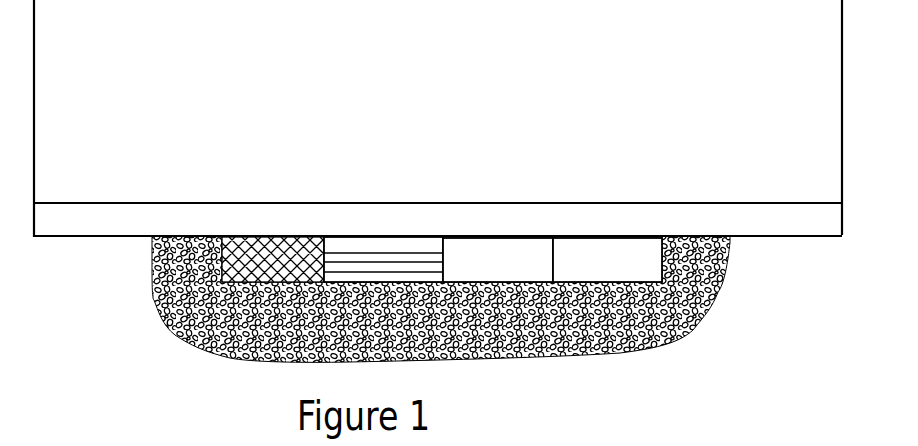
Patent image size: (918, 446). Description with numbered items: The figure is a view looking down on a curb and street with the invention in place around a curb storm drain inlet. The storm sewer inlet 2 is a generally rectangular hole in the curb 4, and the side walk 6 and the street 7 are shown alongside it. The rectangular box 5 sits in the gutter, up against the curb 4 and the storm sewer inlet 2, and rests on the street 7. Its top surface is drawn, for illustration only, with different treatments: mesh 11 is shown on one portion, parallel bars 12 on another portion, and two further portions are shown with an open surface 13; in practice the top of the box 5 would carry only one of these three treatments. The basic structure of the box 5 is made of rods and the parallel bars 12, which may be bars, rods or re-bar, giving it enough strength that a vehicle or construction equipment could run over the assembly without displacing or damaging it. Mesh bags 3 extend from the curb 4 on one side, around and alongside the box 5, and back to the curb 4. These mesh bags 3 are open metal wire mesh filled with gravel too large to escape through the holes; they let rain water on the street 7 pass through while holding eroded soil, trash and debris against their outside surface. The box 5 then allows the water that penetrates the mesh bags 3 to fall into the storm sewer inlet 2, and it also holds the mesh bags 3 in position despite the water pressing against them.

The storm sewer inlet 2 is at (507, 242).
The mesh bags 3 is at (717, 317).
The curb 4 is at (822, 225).
The box 5 is at (633, 262).
The side walk 6 is at (380, 85).
The street 7 is at (125, 340).
The mesh 11 is at (233, 238).
The parallel bars 12 is at (375, 255).
The open surface 13 is at (495, 258).